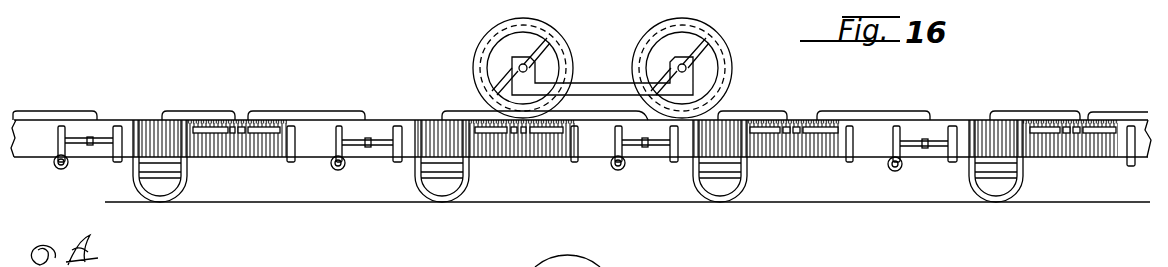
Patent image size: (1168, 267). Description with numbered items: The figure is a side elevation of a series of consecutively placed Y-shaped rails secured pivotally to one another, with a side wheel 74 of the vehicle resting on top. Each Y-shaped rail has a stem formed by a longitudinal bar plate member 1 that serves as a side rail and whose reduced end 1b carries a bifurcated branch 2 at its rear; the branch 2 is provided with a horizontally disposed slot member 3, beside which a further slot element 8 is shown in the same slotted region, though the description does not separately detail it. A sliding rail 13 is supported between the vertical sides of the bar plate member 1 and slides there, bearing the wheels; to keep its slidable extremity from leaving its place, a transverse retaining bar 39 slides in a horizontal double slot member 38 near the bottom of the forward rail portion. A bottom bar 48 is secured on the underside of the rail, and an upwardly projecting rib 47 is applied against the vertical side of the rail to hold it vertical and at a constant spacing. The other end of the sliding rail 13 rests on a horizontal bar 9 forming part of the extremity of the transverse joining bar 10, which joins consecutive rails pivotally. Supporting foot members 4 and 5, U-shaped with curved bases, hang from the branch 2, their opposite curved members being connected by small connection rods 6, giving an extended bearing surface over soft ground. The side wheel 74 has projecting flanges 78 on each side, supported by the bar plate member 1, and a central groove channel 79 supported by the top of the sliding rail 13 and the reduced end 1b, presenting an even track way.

The bar plate member of the Y-shaped rail 1 is at (112, 122).
The reduced end of the Y-shaped rail 1b is at (185, 113).
The sliding rail 13 is at (45, 111).
The bifurcated branch of the Y-shaped rail 2 is at (278, 137).
The slot member 3 is at (267, 132).
The slot 8 is at (245, 133).
The horizontal bar portion of the transverse joining bar 9 is at (526, 138).
The transverse joining bar 10 is at (231, 133).
The rib 47 is at (292, 160).
The horizontal double slot member 38 is at (355, 148).
The transverse retaining bar 39 is at (368, 147).
The bottom bar 48 is at (336, 170).
The supporting foot member 4 is at (417, 190).
The supporting foot member 5 is at (465, 187).
The connection rod 6 is at (437, 196).
The side wheel 74 is at (647, 32).
The flange 78 is at (478, 65).
The central groove channel 79 is at (510, 32).